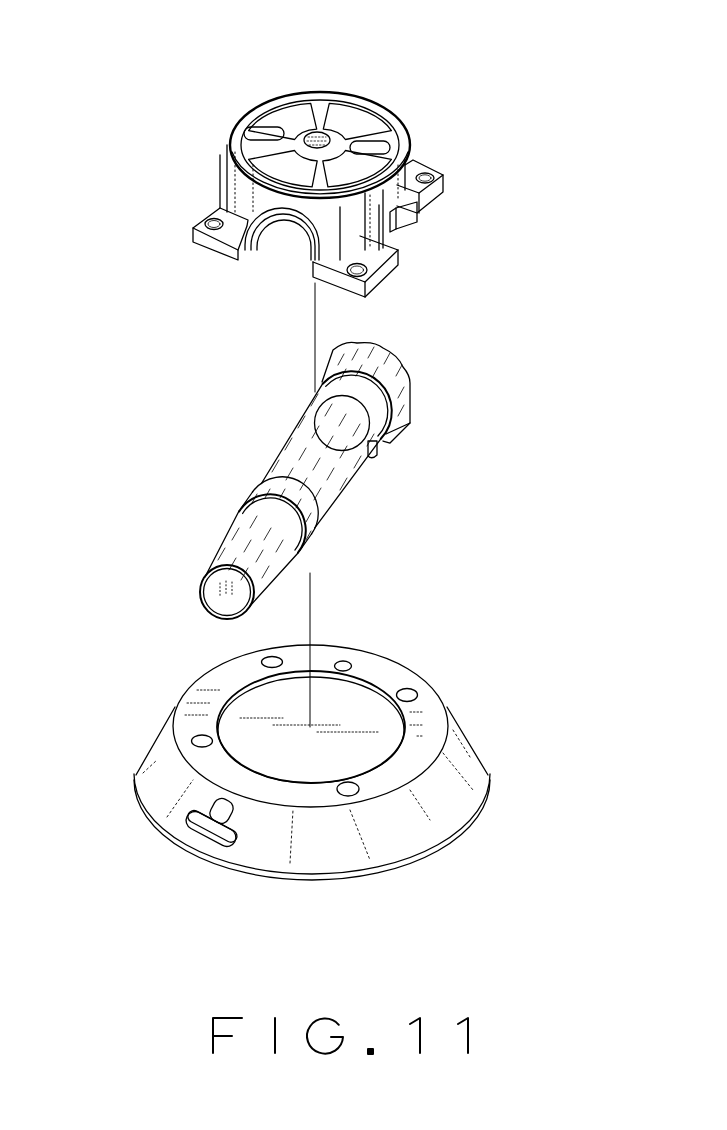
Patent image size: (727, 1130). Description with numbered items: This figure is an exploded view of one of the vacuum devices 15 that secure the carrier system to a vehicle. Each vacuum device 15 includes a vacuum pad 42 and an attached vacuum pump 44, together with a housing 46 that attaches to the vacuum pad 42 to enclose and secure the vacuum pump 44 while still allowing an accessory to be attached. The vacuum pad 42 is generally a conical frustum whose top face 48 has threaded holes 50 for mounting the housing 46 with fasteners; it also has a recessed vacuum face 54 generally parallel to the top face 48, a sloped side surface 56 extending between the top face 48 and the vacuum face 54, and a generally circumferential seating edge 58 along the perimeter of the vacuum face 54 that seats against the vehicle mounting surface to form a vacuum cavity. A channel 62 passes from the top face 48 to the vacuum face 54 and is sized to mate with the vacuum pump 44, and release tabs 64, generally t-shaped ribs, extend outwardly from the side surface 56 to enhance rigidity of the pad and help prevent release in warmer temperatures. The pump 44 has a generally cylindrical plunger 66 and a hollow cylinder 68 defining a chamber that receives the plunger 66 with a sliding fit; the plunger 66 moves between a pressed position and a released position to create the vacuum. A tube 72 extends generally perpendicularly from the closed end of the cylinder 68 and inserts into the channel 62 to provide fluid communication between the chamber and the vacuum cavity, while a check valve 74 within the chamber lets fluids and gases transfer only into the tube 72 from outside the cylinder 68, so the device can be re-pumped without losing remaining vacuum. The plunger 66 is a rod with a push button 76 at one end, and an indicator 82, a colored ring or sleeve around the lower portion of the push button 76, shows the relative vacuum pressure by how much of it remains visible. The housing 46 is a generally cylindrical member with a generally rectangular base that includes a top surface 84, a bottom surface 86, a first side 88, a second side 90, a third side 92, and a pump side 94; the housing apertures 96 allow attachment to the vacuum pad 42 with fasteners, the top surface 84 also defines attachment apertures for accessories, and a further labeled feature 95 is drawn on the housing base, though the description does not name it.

The vacuum device 15 is at (470, 100).
The vacuum pad 42 is at (166, 636).
The vacuum pump 44 is at (289, 410).
The housing 46 is at (226, 98).
The top face 48 is at (400, 667).
The threaded holes 50 is at (420, 693).
The vacuum face 54 is at (382, 880).
The sloped side surface 56 is at (468, 750).
The seating edge 58 is at (480, 806).
The channel 62 is at (346, 661).
The release tabs 64 is at (207, 832).
The plunger 66 is at (198, 544).
The cylinder 68 is at (337, 490).
The tube 72 is at (377, 457).
The check valve 74 is at (388, 402).
The push button 76 is at (200, 589).
The indicator 82 is at (234, 515).
The top surface 84 is at (352, 97).
The bottom surface 86 is at (426, 170).
The first side 88 is at (432, 211).
The second side 90 is at (232, 142).
The third side 92 is at (325, 93).
The pump side 94 is at (248, 195).
The mounting flange 95 is at (366, 264).
The housing apertures 96 is at (312, 136).